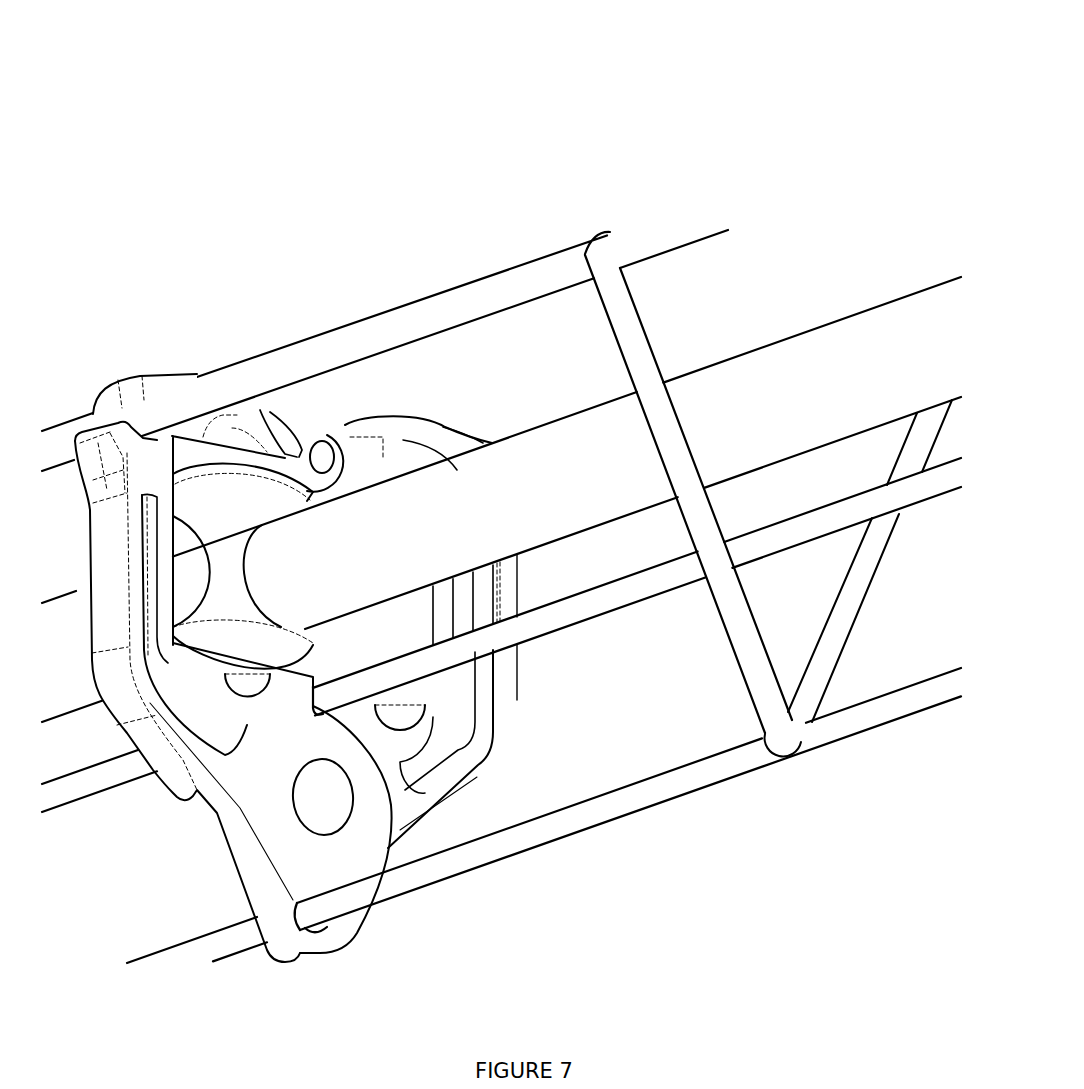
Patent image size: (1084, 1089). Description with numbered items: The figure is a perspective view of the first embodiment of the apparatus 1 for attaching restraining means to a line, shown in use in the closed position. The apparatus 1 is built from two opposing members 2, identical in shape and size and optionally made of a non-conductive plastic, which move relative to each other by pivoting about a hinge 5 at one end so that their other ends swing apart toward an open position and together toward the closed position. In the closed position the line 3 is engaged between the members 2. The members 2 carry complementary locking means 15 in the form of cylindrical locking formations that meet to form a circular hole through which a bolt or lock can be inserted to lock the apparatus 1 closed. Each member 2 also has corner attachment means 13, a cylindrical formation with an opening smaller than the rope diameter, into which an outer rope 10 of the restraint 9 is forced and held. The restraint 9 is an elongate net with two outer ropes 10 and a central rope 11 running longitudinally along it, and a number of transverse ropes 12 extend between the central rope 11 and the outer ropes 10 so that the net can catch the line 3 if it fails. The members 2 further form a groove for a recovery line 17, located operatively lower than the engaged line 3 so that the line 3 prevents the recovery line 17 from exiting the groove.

The apparatus 1 is at (745, 68).
The member 2 is at (305, 668).
The line 3 is at (497, 447).
The hinge 5 is at (316, 811).
The restraint 9 is at (645, 345).
The outer rope 10 is at (408, 318).
The central rope 11 is at (620, 795).
The transverse rope 12 is at (749, 626).
The corner attachment means 13 is at (97, 432).
The locking means 15 is at (325, 430).
The recovery line 17 is at (612, 585).